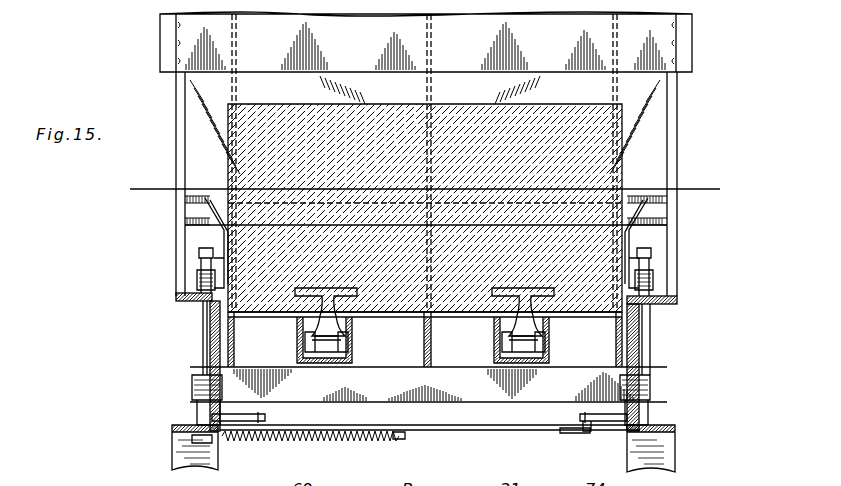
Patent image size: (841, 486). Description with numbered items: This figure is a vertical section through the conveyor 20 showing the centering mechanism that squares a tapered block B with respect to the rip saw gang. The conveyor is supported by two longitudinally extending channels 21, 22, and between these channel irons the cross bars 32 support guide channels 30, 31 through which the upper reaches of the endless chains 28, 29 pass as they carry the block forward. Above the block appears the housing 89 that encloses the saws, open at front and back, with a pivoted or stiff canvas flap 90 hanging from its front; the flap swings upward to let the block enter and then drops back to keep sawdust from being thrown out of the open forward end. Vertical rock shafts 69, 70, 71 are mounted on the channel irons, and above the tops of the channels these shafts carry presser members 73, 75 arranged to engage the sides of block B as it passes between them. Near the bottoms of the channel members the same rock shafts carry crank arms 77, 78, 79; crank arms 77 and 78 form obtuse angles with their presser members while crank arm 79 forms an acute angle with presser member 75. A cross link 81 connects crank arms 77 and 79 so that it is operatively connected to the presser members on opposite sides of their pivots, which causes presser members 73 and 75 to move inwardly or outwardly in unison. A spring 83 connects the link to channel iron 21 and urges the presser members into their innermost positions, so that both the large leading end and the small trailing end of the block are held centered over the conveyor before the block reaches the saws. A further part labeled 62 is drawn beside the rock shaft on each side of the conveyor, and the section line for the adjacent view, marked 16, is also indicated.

The horizontal member 16 is at (718, 190).
The housing 89 is at (195, 47).
The flap 90 is at (658, 118).
The channel 22 is at (186, 298).
The channel 21 is at (672, 300).
The block B is at (590, 160).
The presser member 73 is at (215, 238).
The presser member 75 is at (628, 243).
The conveyor 20 is at (495, 350).
The endless chain 29 is at (297, 346).
The endless chain 28 is at (552, 346).
The guide channel 31 is at (346, 338).
The guide channel 30 is at (500, 330).
The cross bar 32 is at (482, 393).
The cross link 81 is at (448, 430).
The column 62 is at (213, 338).
The rock shaft 69 is at (205, 325).
The rock shaft 71 is at (650, 352).
The crank arm 78 is at (218, 448).
The rock shaft 70 is at (672, 448).
The spring 83 is at (345, 438).
The crank arm 77 is at (238, 428).
The crank arm 79 is at (598, 422).